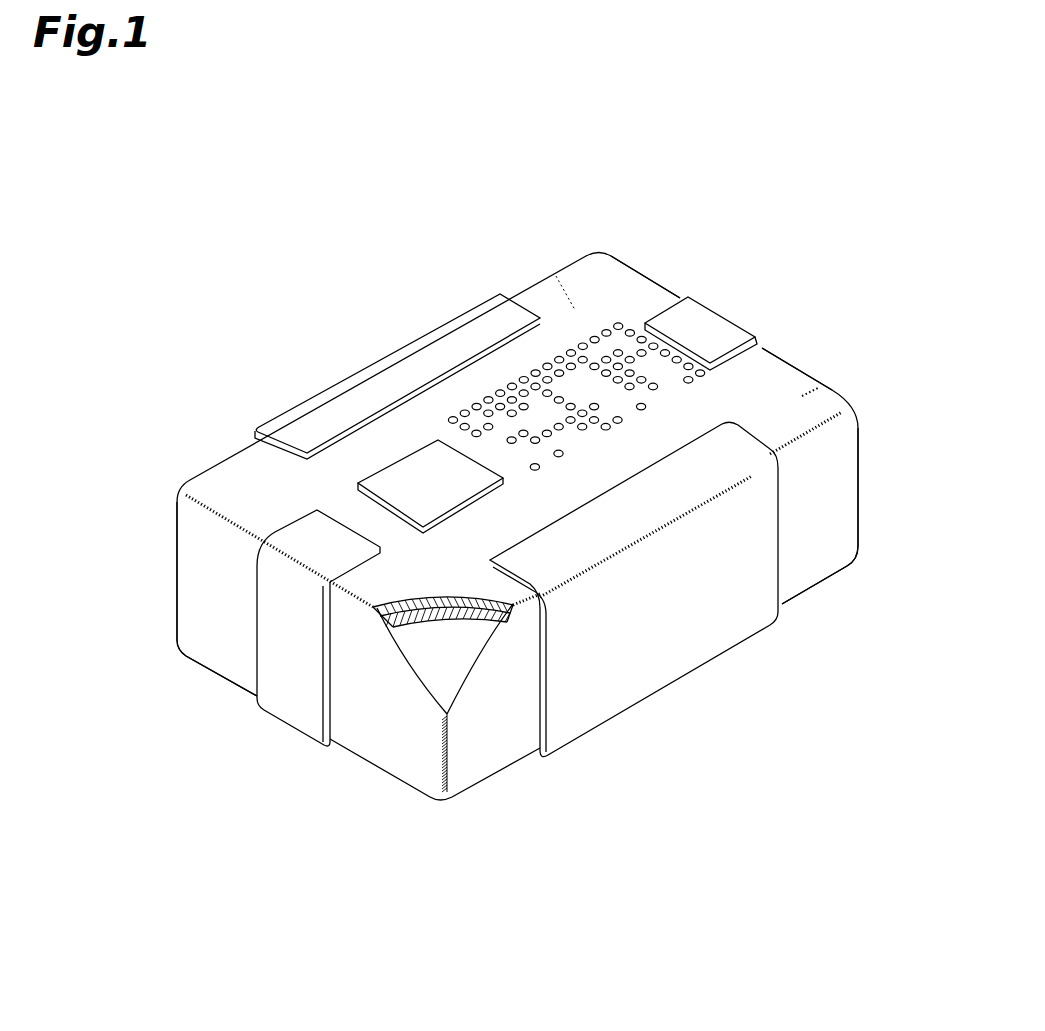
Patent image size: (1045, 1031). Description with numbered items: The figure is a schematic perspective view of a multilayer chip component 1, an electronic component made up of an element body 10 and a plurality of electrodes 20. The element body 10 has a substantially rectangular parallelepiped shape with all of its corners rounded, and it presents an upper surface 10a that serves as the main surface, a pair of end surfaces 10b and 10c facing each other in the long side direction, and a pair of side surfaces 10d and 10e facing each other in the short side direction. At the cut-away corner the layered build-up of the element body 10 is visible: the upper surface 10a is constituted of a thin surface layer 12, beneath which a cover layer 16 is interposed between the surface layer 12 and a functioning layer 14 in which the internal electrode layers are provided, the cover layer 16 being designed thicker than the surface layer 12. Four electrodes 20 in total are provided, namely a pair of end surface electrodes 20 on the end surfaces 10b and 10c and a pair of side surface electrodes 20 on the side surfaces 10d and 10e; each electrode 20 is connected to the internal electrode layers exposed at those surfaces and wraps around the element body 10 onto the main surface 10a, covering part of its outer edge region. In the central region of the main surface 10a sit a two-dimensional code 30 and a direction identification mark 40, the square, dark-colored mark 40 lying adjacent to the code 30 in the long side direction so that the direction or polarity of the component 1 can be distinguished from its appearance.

The multilayer chip component 1 is at (205, 185).
The element body 10 is at (228, 478).
The upper surface 10a is at (613, 298).
The end surface 10b is at (233, 623).
The end surface 10c is at (808, 392).
The side surface 10d is at (817, 560).
The side surface 10e is at (556, 275).
The surface layer 12 is at (447, 600).
The functioning layer 14 is at (433, 662).
The cover layer 16 is at (462, 627).
The electrodes 20 is at (382, 377).
The two-dimensional code 30 is at (658, 393).
The direction identification mark 40 is at (413, 487).